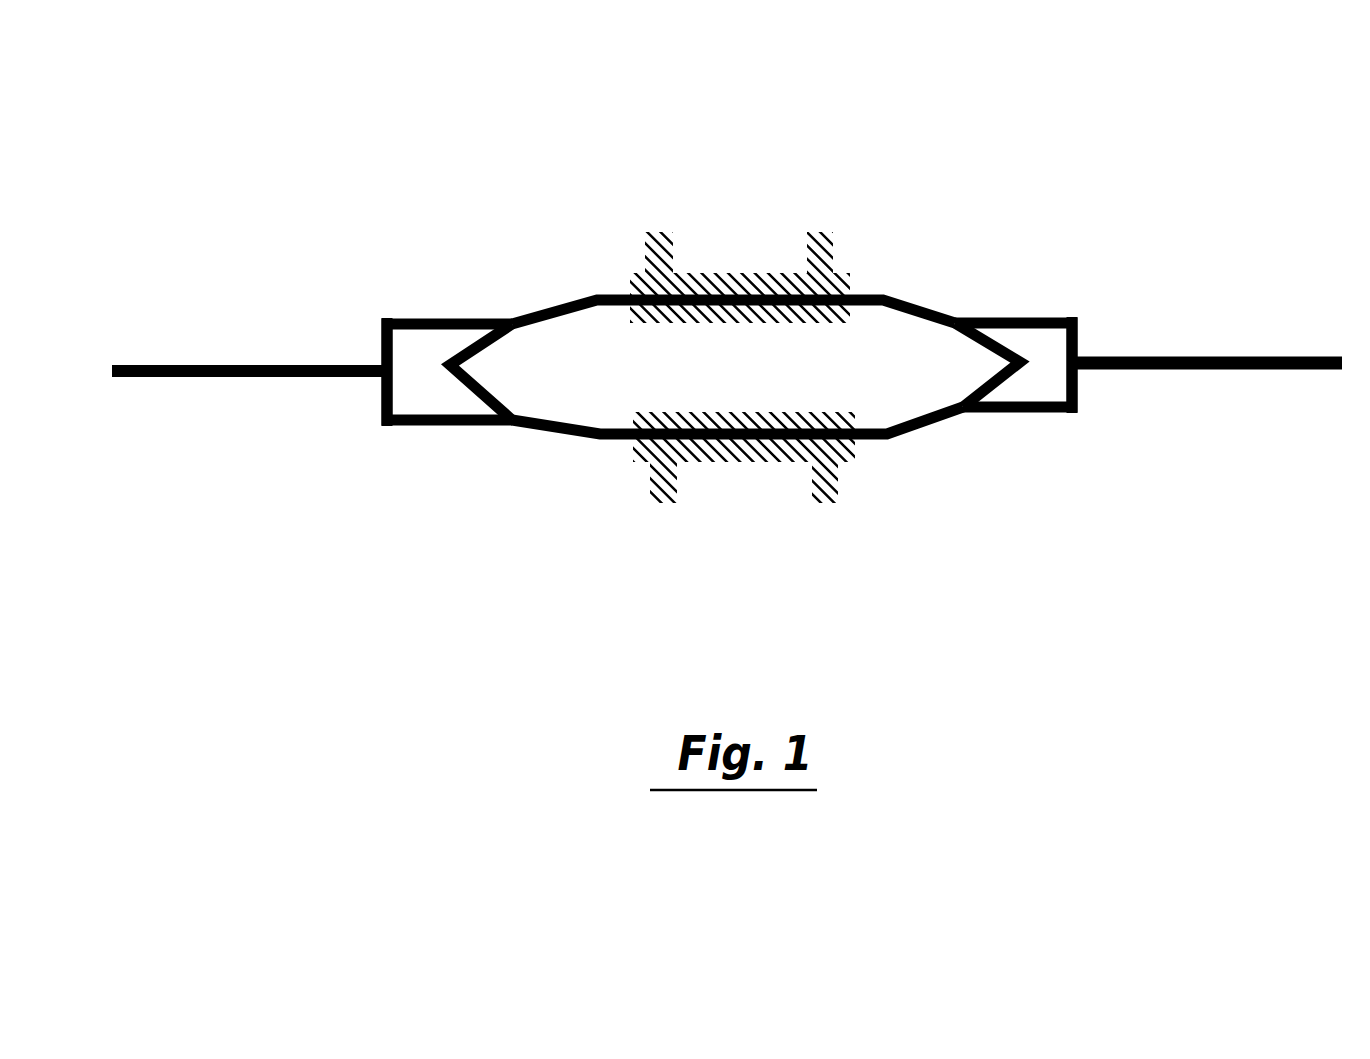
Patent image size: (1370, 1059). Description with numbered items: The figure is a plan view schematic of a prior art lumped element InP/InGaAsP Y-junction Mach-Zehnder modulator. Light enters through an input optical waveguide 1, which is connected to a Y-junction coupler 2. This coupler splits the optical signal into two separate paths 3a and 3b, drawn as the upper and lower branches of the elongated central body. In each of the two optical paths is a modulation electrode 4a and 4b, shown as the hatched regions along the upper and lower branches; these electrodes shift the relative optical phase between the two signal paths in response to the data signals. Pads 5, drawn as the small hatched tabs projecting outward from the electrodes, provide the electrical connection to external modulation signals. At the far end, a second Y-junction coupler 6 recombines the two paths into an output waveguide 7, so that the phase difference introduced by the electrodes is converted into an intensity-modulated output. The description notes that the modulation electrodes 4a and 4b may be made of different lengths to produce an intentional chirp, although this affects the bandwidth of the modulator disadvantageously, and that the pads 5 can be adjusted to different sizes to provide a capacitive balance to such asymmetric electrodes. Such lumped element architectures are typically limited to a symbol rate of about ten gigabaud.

The input optical waveguide 1 is at (217, 363).
The Y-junction coupler 2 is at (455, 318).
The optical path 3a is at (545, 293).
The optical path 3b is at (540, 438).
The modulation electrode 4a is at (732, 228).
The modulation electrode 4b is at (760, 478).
The pads 5 is at (647, 210).
The Y-junction coupler 6 is at (1000, 313).
The output waveguide 7 is at (1182, 357).